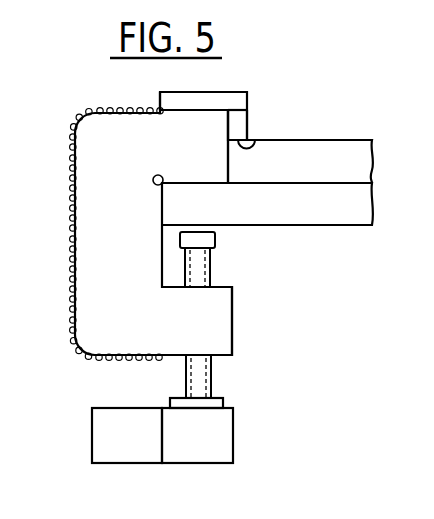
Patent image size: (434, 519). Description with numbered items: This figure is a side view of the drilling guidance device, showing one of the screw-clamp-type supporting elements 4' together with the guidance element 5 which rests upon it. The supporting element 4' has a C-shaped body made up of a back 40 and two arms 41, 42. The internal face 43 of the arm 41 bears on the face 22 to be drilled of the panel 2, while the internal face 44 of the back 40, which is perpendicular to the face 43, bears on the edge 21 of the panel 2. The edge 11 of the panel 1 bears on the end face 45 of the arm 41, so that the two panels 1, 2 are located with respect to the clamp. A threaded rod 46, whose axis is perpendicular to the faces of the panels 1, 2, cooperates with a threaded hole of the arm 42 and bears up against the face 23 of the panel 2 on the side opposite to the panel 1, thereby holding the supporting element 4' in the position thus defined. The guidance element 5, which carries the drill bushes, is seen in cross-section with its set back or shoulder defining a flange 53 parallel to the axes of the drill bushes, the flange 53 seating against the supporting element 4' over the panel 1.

The panel 1 is at (345, 150).
The panel 2 is at (298, 214).
The supporting element 4' is at (179, 232).
The guidance element 5 is at (170, 98).
The edge of panel 1 11 is at (228, 160).
The edge of panel 2 21 is at (160, 212).
The face to be drilled 22 is at (260, 182).
The face of panel 2 23 is at (345, 230).
The back 40 is at (92, 263).
The arm 41 is at (203, 117).
The arm 42 is at (223, 345).
The internal face of arm 41 43 is at (213, 185).
The internal face of back 40 44 is at (163, 270).
The end face of arm 41 45 is at (233, 113).
The threaded rod 46 is at (200, 380).
The flange 53 is at (257, 140).